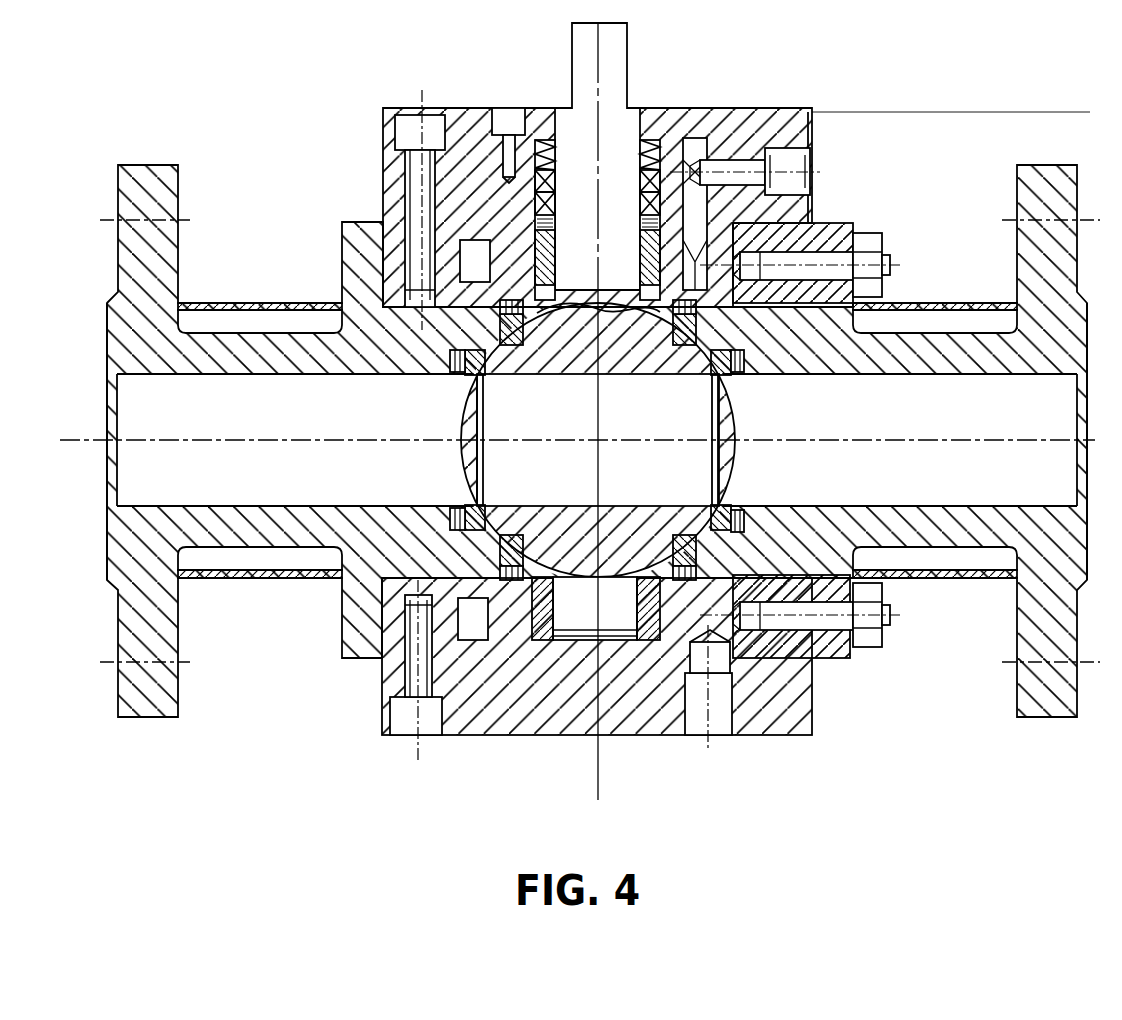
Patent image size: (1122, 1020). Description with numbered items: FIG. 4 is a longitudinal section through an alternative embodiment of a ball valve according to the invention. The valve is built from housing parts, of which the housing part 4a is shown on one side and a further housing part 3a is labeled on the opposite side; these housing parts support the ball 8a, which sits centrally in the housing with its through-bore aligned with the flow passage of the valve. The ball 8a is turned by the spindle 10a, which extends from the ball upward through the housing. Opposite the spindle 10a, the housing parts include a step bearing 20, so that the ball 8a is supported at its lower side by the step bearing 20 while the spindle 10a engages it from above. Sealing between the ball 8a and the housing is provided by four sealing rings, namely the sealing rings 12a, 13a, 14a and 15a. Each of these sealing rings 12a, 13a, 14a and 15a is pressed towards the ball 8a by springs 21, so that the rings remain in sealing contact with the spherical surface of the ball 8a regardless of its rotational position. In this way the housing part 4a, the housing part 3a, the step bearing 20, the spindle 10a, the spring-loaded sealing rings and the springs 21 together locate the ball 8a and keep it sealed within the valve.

The outlet pipe end member 3a is at (945, 532).
The housing part 4a is at (272, 532).
The ball 8a is at (642, 372).
The spindle 10a is at (630, 63).
The sealing ring 12a is at (478, 376).
The sealing ring 13a is at (722, 372).
The sealing ring 14a is at (522, 342).
The sealing ring 15a is at (695, 545).
The step bearing 20 is at (537, 617).
The springs 21 is at (450, 360).